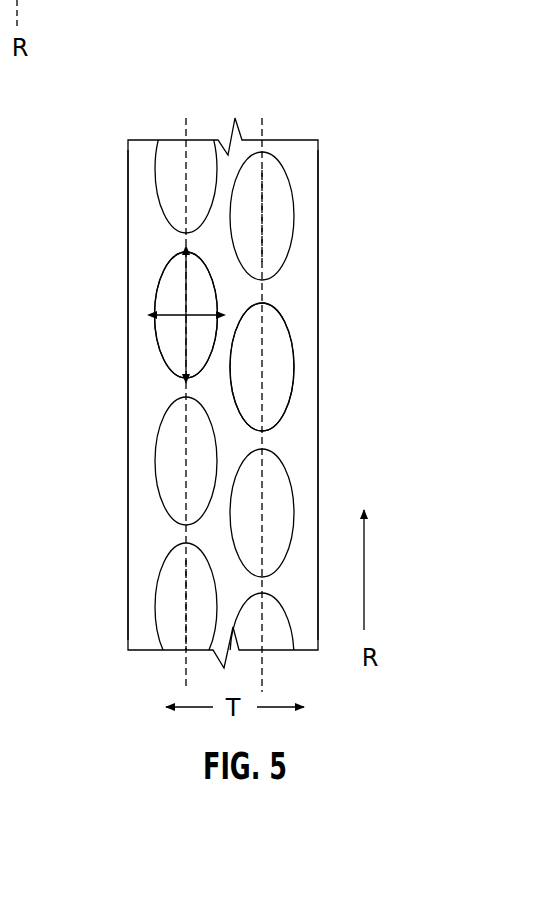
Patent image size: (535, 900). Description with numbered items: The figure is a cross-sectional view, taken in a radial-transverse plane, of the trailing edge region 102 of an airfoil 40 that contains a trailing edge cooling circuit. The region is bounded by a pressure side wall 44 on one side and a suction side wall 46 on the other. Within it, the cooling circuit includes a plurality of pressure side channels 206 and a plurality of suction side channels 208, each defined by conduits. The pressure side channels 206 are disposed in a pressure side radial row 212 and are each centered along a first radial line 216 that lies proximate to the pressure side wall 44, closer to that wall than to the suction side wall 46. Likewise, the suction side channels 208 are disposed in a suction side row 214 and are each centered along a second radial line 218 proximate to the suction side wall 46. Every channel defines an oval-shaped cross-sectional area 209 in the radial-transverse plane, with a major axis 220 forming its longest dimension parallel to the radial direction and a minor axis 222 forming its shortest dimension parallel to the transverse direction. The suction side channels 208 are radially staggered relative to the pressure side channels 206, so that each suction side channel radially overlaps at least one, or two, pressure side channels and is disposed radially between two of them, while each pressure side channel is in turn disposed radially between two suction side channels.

The airfoil 40 is at (409, 51).
The trailing edge region 102 is at (349, 109).
The pressure side wall 44 is at (318, 412).
The suction side wall 46 is at (128, 218).
The pressure side channels 206 is at (277, 223).
The suction side channels 208 is at (164, 185).
The oval-shaped cross-sectional area 209 is at (172, 303).
The pressure side radial row 212 is at (282, 124).
The suction side row 214 is at (167, 126).
The first radial line 216 is at (267, 248).
The second radial line 218 is at (185, 590).
The major axis 220 is at (185, 290).
The minor axis 222 is at (177, 317).